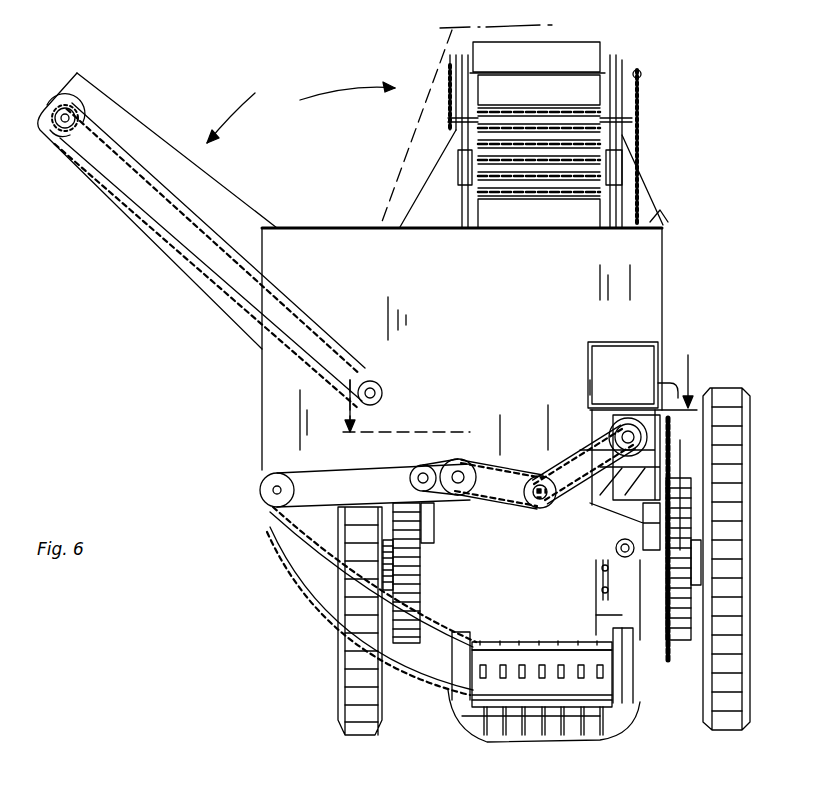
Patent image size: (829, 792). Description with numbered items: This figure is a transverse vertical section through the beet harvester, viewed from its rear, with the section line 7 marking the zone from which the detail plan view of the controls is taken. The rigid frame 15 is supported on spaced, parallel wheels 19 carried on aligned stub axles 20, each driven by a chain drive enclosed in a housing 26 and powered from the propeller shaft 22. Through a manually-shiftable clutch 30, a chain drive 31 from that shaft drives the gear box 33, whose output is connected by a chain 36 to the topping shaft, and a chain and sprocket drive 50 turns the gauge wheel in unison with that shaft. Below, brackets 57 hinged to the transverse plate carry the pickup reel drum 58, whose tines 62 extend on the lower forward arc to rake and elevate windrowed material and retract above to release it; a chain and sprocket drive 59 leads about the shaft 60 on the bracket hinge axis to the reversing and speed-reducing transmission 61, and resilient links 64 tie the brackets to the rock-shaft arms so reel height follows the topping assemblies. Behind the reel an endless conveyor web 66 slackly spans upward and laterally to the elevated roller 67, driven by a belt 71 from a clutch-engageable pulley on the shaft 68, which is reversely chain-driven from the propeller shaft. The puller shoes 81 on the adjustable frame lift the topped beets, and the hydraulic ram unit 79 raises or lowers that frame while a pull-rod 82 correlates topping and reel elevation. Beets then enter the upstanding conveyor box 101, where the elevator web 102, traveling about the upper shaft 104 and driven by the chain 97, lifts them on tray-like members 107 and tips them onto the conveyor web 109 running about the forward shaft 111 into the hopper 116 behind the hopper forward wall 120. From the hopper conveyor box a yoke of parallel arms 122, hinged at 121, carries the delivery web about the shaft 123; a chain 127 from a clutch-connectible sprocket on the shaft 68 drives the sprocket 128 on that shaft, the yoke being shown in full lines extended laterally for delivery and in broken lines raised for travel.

The section line 7- 7 is at (516, 393).
The rigid frame 15 is at (435, 519).
The wheels 19 is at (330, 660).
The stub axles 20 is at (383, 556).
The propeller shaft 22 is at (538, 508).
The housings 26 is at (412, 568).
The manually-shiftable clutch 30 is at (628, 437).
The chain drive 31 is at (584, 464).
The gear box 33 is at (622, 482).
The chain 36 is at (666, 427).
The chain and sprocket drive 50 is at (612, 616).
The brackets 57 is at (455, 680).
The drum 58 is at (542, 674).
The chain and sprocket drive 59 is at (672, 466).
The shaft 60 is at (629, 560).
The reversing and speed-reducing transmission 61 is at (624, 665).
The tines 62 is at (575, 645).
The links 64 is at (600, 580).
The conveyor web 66 is at (324, 597).
The roller 67 is at (272, 490).
The shaft 68 is at (464, 460).
The belt 71 is at (343, 470).
The hydraulic ram unit 79 is at (672, 382).
The puller shoes 81 is at (470, 720).
The pull-rod 82 is at (684, 440).
The chain 97 is at (641, 147).
The conveyor box 101 is at (539, 213).
The conveyor web 102 is at (517, 56).
The shaft 104 is at (642, 75).
The tray-like members 107 is at (585, 50).
The conveyor web 109 is at (520, 98).
The forward shaft 111 is at (636, 120).
The hopper 116 is at (657, 222).
The hopper forward wall 120 is at (462, 349).
The hinge 121 is at (374, 390).
The arms 122 is at (398, 178).
The shaft 123 is at (72, 115).
The chain 127 is at (140, 212).
The sprocket 128 is at (60, 132).